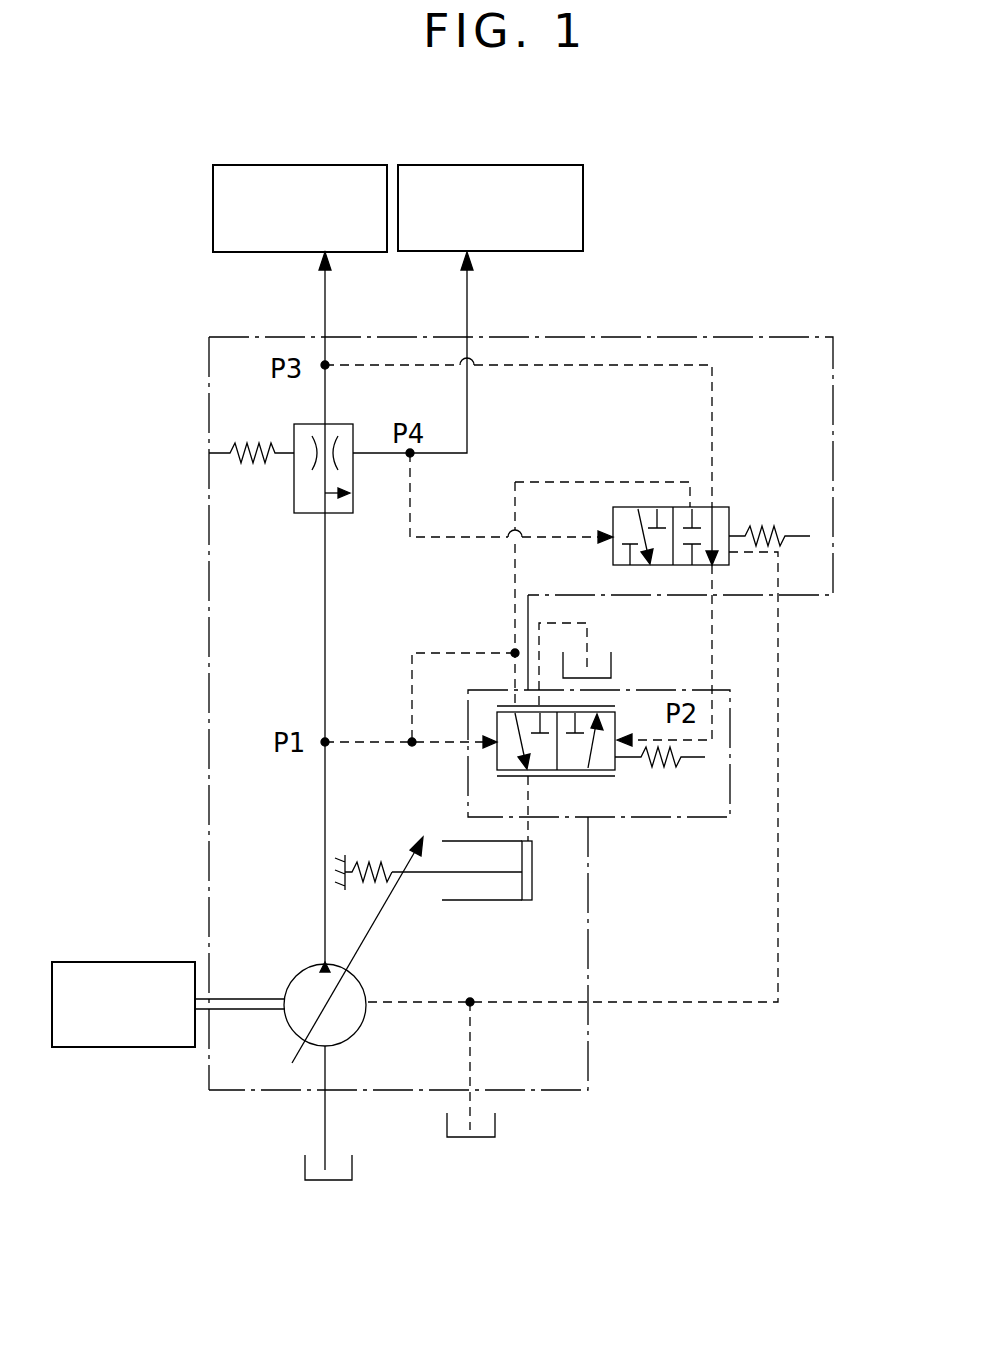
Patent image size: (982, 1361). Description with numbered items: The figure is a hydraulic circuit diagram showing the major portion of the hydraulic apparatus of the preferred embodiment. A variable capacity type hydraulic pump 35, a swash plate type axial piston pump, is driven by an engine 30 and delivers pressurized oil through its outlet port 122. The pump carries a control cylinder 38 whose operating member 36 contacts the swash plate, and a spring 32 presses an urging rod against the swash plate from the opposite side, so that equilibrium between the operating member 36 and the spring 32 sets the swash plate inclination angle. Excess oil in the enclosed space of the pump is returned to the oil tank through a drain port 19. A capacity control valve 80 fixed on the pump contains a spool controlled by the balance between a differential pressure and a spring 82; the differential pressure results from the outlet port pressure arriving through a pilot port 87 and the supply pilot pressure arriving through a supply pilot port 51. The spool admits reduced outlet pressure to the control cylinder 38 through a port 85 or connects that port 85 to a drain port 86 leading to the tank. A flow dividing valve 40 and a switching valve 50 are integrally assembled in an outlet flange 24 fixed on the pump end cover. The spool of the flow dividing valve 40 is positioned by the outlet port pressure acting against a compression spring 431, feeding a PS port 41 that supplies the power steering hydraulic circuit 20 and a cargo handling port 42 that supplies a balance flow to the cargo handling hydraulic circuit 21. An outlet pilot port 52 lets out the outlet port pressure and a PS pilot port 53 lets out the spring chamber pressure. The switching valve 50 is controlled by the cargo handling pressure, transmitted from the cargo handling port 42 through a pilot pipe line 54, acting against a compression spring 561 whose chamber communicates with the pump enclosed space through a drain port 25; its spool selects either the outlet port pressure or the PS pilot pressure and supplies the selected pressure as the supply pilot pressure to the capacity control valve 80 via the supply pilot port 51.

The power steering hydraulic circuit 20 is at (213, 197).
The cargo handling hydraulic circuit 21 is at (583, 205).
The outlet flange 24 is at (208, 578).
The PS port 41 is at (323, 304).
The cargo handling port 42 is at (467, 300).
The compression spring 431 is at (240, 440).
The flow dividing valve 40 is at (294, 513).
The PS pilot port 53 is at (628, 370).
The outlet pilot port 52 is at (586, 478).
The pilot pipe line 54 is at (447, 545).
The switching valve 50 is at (730, 507).
The compression spring 561 is at (768, 528).
The drain port 25 is at (785, 655).
The supply pilot port 51 is at (720, 645).
The drain port 86 is at (590, 622).
The pilot port 87 is at (383, 750).
The capacity control valve 80 is at (675, 817).
The spring 82 is at (658, 770).
The port 85 is at (531, 826).
The control cylinder 38 is at (487, 908).
The operating member 36 is at (427, 873).
The spring 32 is at (382, 862).
The outlet port 122 is at (325, 832).
The engine 30 is at (127, 1047).
The drain port 19 is at (473, 1048).
The variable capacity type hydraulic pump 35 is at (565, 1092).